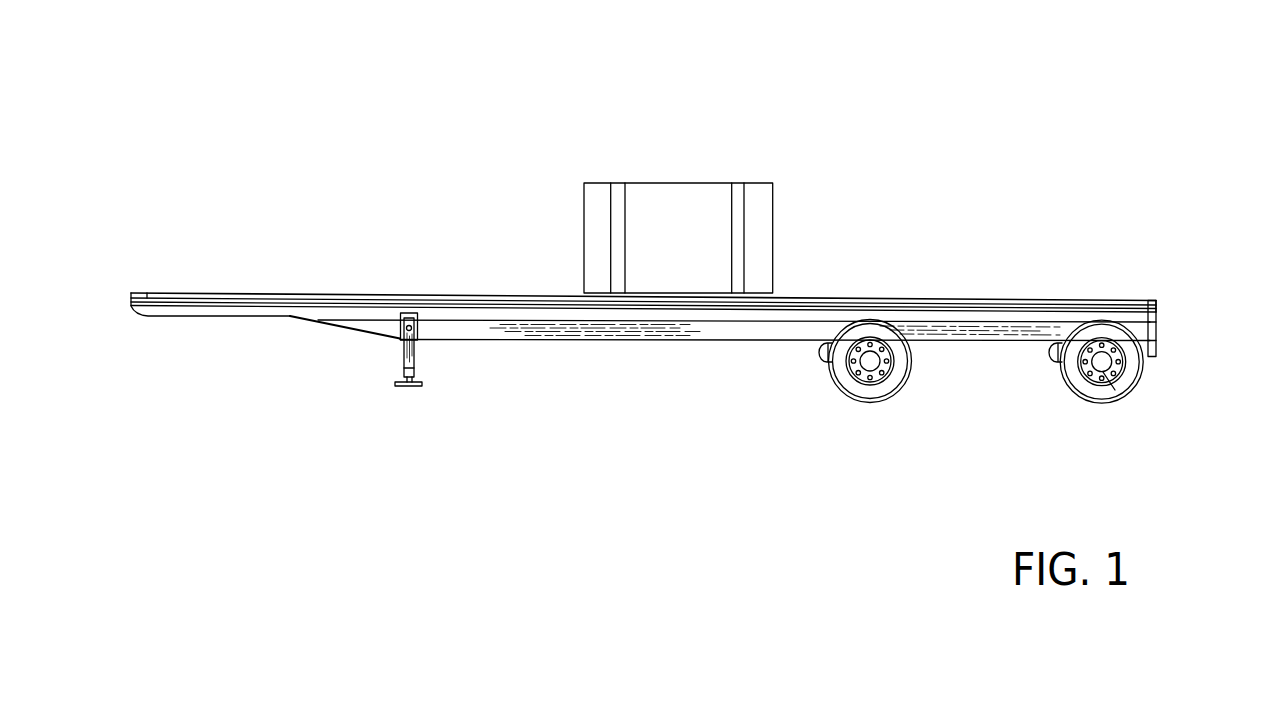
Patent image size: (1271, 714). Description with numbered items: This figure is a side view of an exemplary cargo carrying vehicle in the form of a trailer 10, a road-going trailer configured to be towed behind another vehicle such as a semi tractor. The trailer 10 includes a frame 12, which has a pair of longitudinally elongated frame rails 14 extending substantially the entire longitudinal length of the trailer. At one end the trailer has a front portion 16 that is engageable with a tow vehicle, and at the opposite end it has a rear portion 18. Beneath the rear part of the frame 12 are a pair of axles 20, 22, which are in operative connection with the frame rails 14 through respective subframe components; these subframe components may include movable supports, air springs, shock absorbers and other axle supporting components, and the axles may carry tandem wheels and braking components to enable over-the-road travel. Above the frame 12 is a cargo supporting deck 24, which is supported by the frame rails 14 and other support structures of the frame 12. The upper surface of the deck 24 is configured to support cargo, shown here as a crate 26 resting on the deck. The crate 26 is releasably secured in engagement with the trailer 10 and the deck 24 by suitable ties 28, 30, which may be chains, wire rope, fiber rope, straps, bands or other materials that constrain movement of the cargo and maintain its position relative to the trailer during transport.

The trailer 10 is at (1032, 80).
The frame 12 is at (678, 358).
The frame rails 14 is at (518, 320).
The front portion 16 is at (178, 274).
The rear portion 18 is at (1172, 342).
The axle 20 is at (853, 363).
The axle 22 is at (1083, 362).
The cargo supporting deck 24 is at (878, 295).
The crate 26 is at (757, 185).
The tie 28 is at (628, 193).
The tie 30 is at (733, 194).